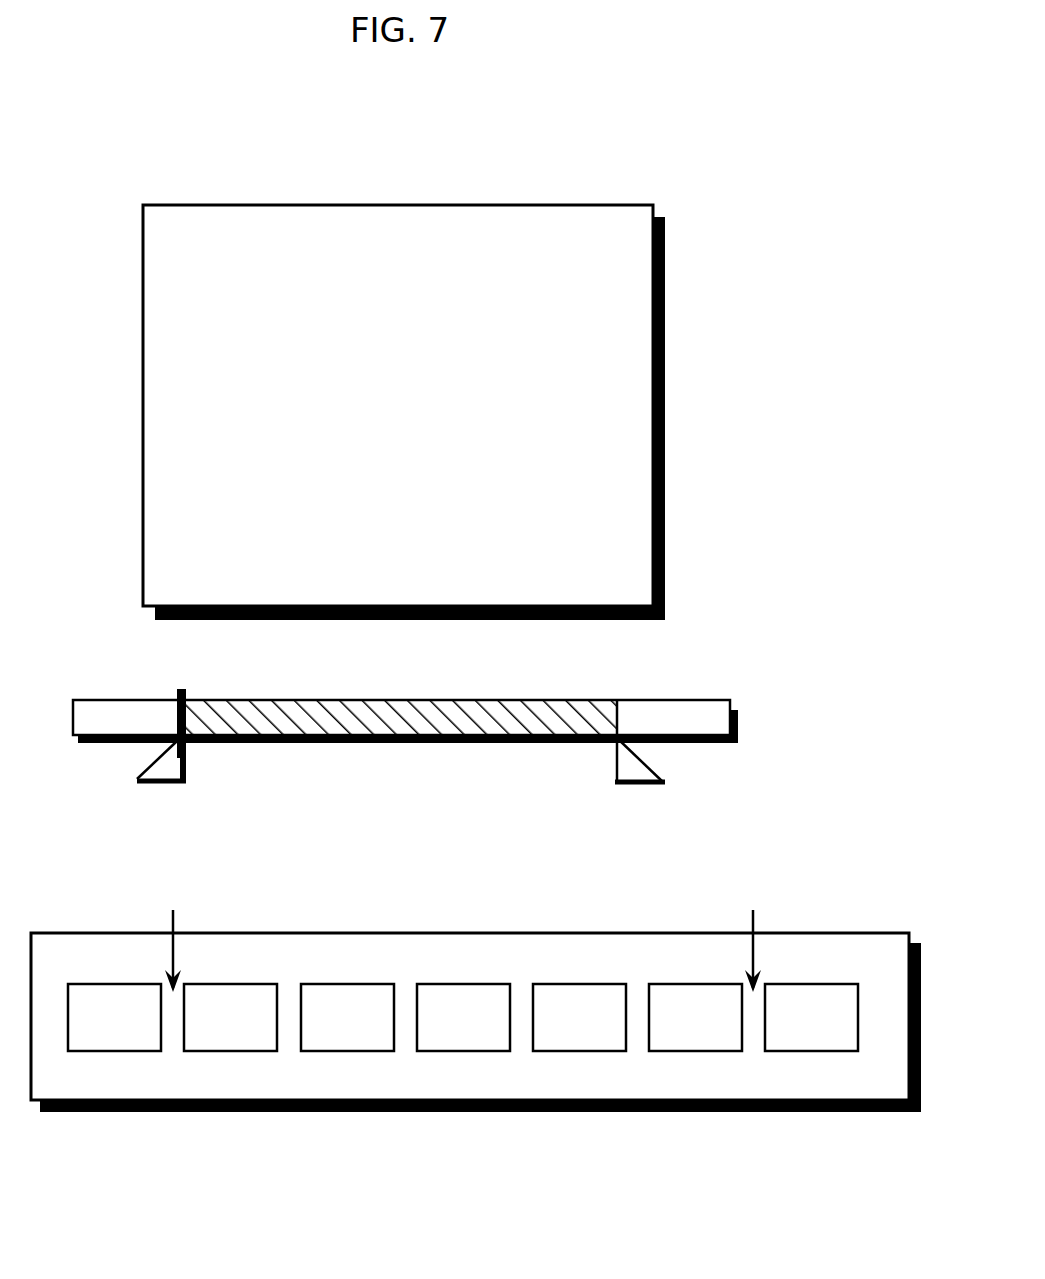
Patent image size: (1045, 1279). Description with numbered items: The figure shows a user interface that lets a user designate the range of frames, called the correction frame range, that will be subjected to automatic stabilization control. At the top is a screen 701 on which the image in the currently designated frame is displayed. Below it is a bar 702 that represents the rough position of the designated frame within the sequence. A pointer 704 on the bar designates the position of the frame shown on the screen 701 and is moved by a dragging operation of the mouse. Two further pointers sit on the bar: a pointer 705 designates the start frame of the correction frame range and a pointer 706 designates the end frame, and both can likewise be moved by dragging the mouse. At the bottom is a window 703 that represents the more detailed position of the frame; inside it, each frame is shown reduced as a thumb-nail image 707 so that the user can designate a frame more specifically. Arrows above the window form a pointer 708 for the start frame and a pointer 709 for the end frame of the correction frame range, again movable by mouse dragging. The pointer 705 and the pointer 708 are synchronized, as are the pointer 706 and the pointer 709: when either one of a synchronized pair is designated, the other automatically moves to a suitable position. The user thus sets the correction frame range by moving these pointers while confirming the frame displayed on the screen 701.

The screen 701 is at (578, 205).
The bar 702 is at (680, 686).
The window 703 is at (700, 1120).
The pointer 704 is at (180, 688).
The pointer 705 is at (158, 780).
The pointer 706 is at (633, 784).
The thumb-nail image 707 is at (345, 1052).
The pointer 708 is at (173, 913).
The pointer 709 is at (753, 913).